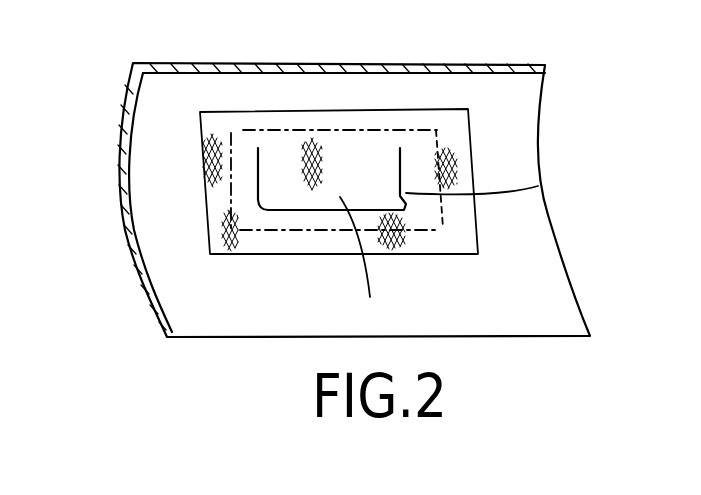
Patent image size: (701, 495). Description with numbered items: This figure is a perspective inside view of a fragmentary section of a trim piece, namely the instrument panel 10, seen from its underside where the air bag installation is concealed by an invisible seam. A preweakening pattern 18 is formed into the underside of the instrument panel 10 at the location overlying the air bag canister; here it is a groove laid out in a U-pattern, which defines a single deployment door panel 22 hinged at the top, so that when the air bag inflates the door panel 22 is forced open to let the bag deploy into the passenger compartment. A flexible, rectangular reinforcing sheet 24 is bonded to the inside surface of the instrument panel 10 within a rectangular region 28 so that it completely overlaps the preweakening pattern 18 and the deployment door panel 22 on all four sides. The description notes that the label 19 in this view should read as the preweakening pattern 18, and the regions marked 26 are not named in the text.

The instrument panel 10 is at (545, 100).
The preweakening pattern 18 is at (407, 212).
The edge line 19 is at (538, 186).
The deployment door panel 22 is at (370, 297).
The flexible reinforcing sheet 24 is at (410, 108).
The adhesive regions 26 is at (320, 117).
The rectangular region 28 is at (238, 140).